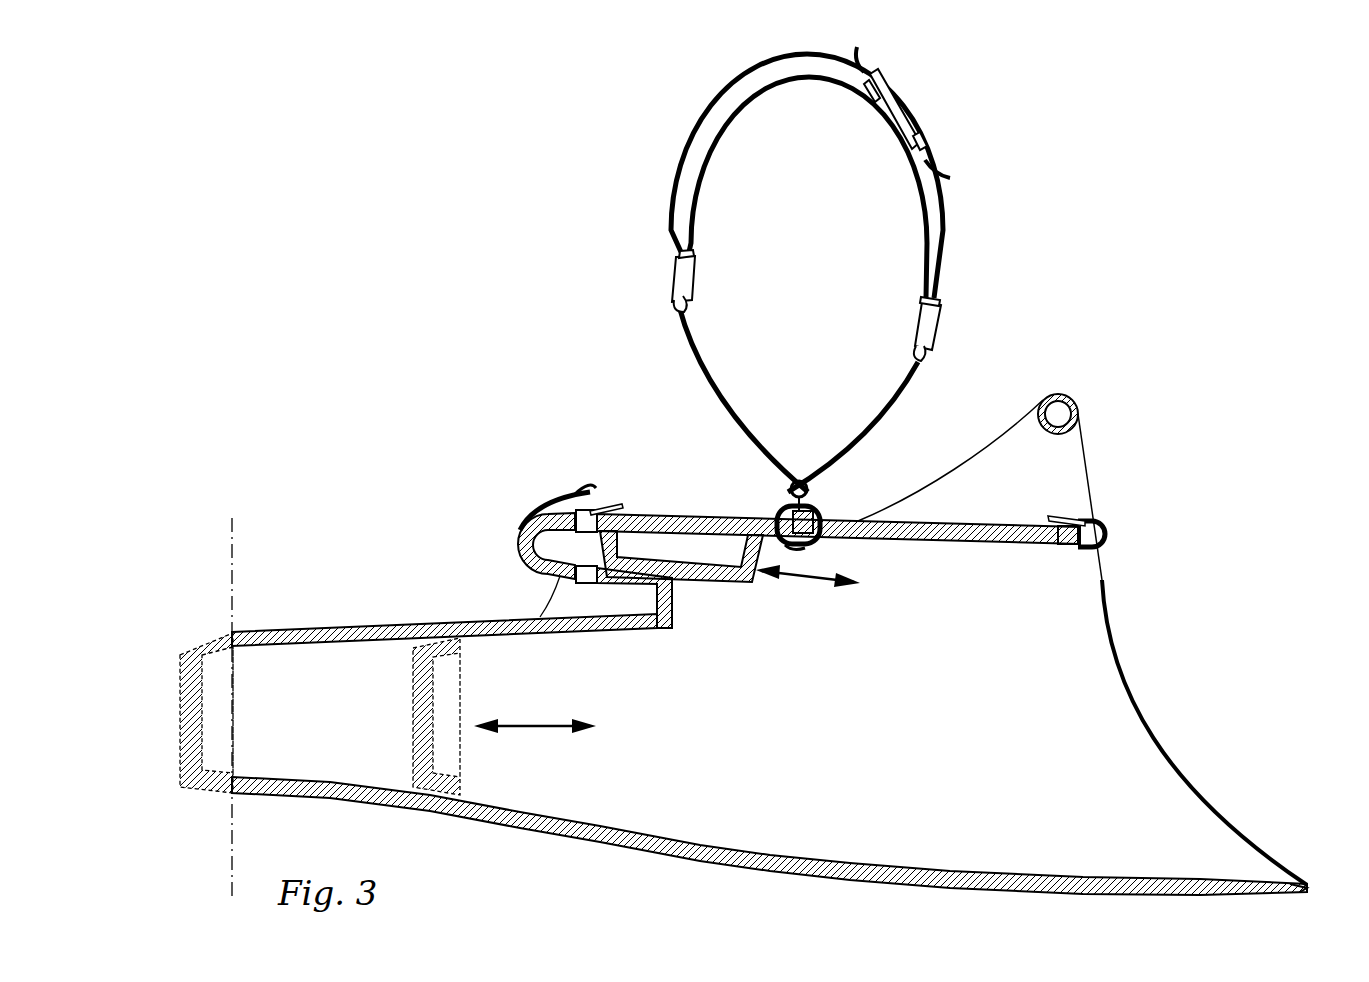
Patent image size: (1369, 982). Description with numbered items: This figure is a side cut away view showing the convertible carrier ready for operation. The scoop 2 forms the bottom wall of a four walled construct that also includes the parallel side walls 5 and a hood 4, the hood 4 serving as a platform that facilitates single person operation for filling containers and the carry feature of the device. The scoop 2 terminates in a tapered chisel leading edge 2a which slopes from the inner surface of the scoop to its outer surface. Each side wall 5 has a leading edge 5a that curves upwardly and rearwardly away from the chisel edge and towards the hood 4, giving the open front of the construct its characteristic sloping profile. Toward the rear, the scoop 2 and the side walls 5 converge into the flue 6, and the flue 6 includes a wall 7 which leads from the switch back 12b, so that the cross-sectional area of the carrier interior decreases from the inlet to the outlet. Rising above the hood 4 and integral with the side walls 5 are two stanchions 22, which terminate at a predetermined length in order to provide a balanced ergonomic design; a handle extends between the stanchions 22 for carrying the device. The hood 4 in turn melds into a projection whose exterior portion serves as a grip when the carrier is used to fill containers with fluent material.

The scoop 2 is at (793, 831).
The leading edge 2a is at (1307, 885).
The hood 4 is at (960, 541).
The side wall 5 is at (1133, 649).
The leading edge 5a is at (1145, 717).
The flue 6 is at (635, 835).
The wall 7 is at (313, 632).
The switch back 12b is at (657, 598).
The stanchion 22 is at (1040, 478).